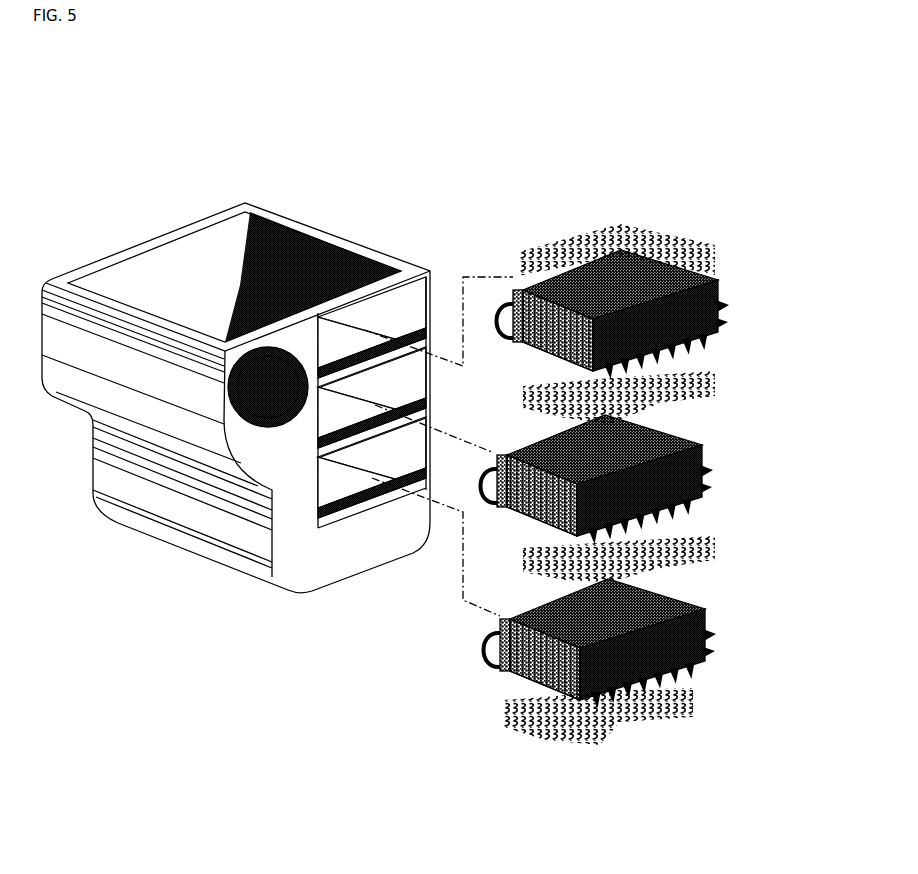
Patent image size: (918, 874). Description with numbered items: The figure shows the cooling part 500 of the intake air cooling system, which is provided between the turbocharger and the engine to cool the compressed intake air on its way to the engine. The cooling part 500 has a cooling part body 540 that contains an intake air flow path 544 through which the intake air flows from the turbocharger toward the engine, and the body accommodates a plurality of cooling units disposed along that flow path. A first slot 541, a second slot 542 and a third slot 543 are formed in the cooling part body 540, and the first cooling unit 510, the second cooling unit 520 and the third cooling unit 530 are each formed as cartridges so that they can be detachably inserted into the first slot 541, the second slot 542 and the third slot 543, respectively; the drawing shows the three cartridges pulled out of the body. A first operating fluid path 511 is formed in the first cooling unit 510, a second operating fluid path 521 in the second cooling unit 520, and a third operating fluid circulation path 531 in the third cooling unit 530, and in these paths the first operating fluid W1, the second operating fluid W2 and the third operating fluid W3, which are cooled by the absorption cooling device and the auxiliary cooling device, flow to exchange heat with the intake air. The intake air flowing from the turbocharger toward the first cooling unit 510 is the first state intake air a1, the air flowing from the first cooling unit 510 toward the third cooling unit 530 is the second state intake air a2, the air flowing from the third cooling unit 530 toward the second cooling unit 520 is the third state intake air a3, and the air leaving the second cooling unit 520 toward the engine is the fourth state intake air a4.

The cooling part 500 is at (530, 132).
The cooling part body 540 is at (176, 219).
The first slot 541 is at (373, 322).
The second slot 542 is at (350, 483).
The third slot 543 is at (358, 401).
The intake air flow path 544 is at (313, 257).
The first cooling unit 510 is at (687, 225).
The first operating fluid path 511 is at (722, 290).
The first operating fluid W1 is at (732, 311).
The third cooling unit 530 is at (694, 430).
The third operating fluid circulation path 531 is at (706, 455).
The third operating fluid W3 is at (716, 483).
The second cooling unit 520 is at (693, 598).
The second operating fluid path 521 is at (708, 618).
The second operating fluid W2 is at (718, 645).
The first state intake air a1 is at (517, 263).
The second state intake air a2 is at (523, 403).
The third state intake air a3 is at (527, 554).
The fourth state intake air a4 is at (505, 708).